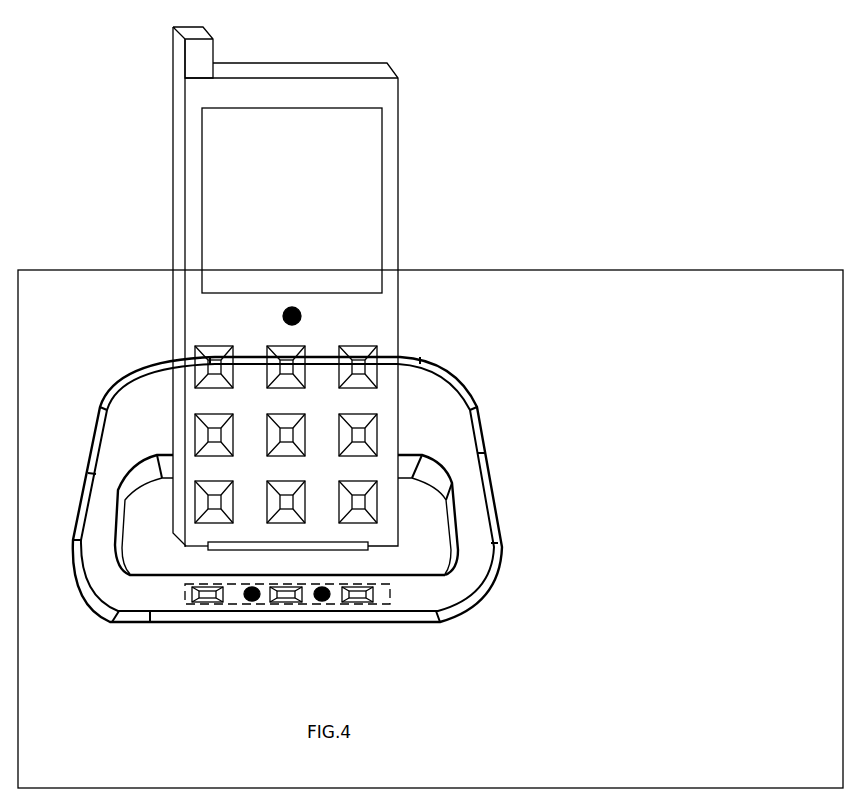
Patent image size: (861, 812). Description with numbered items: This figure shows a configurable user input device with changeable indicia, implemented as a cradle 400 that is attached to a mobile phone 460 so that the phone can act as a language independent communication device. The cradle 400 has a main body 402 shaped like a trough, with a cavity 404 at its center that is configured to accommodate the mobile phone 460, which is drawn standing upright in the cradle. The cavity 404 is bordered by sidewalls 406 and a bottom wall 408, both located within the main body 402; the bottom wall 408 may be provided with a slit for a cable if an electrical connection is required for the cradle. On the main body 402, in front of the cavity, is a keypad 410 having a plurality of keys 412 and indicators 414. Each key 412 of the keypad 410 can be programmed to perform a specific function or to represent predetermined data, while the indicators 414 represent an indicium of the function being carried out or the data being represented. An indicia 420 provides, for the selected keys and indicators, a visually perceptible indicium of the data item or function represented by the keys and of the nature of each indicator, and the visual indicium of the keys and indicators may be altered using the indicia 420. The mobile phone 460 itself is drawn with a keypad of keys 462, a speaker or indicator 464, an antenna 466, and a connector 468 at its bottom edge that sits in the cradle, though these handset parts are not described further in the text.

The cradle 400 is at (306, 527).
The main body 402 is at (484, 506).
The cavity 404 is at (287, 528).
The sidewalls 406 is at (120, 486).
The bottom wall 408 is at (420, 504).
The keypad 410 is at (311, 639).
The keys 412 is at (345, 604).
The indicators 414 is at (252, 601).
The indicia 420 is at (198, 601).
The mobile phone 460 is at (399, 263).
The keypad keys 462 is at (358, 377).
The speaker 464 is at (303, 324).
The antenna 466 is at (177, 61).
The handset connector 468 is at (333, 552).